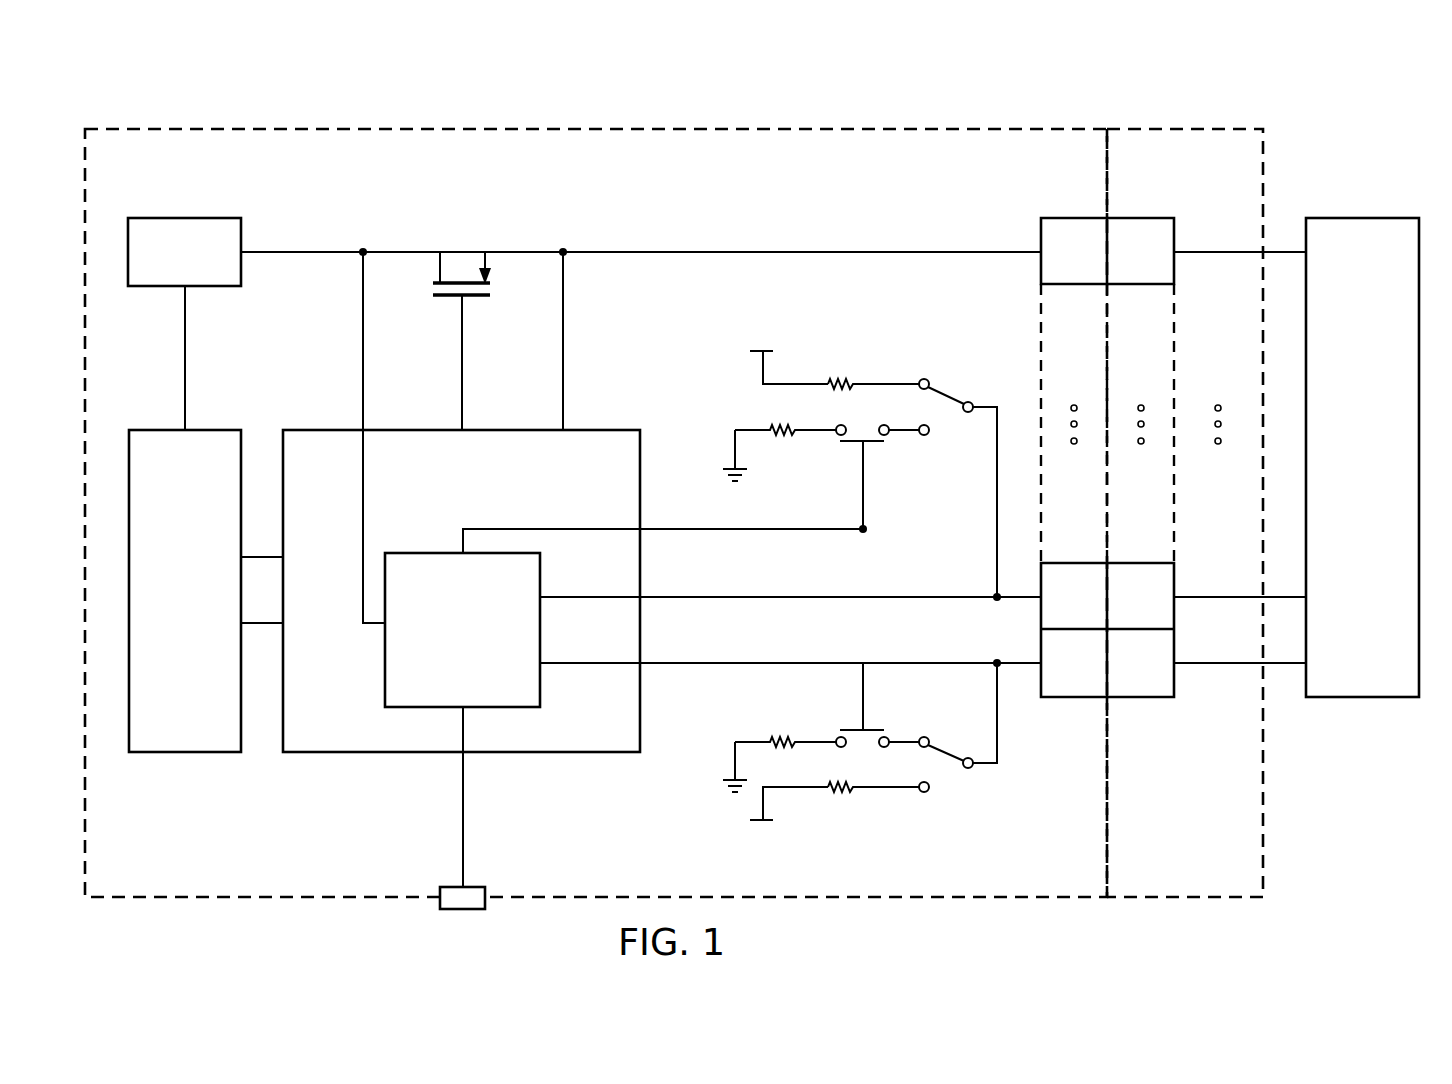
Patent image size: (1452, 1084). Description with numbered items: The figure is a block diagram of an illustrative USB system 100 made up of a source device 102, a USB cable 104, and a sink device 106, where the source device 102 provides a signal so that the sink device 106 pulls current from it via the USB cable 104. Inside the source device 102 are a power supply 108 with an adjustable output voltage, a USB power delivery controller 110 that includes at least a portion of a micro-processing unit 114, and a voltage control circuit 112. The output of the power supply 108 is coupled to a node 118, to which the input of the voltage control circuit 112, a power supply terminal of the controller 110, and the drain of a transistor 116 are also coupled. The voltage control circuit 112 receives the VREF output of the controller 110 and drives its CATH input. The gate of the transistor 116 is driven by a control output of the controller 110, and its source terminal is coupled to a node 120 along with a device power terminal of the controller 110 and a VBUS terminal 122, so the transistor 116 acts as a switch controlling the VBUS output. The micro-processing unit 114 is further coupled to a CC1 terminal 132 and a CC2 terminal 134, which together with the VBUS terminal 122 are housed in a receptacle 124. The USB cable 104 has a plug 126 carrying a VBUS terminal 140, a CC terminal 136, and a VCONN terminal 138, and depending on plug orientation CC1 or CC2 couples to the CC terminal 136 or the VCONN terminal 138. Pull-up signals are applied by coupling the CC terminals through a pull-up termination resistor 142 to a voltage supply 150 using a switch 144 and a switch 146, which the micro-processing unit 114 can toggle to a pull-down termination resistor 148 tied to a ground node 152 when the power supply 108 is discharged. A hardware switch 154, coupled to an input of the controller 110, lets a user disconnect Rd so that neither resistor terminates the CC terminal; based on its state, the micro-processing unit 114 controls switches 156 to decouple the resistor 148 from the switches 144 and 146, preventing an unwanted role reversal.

The USB system 100 is at (628, 101).
The source device 102 is at (483, 122).
The USB cable 104 is at (1207, 120).
The sink device 106 is at (1385, 493).
The power supply 108 is at (172, 218).
The USB power delivery controller 110 is at (423, 424).
The voltage control circuit 112 is at (206, 649).
The micro-processing unit 114 is at (484, 679).
The transistor 116 is at (473, 298).
The node 118 is at (359, 256).
The node 120 is at (566, 256).
The VBUS terminal 122 is at (1095, 268).
The receptacle 124 is at (1073, 492).
The plug 126 is at (1164, 492).
The CC1 terminal 132 is at (1095, 611).
The CC2 terminal 134 is at (1095, 678).
The CC terminal 136 is at (1162, 611).
The VCONN terminal 138 is at (1162, 678).
The VBUS terminal 140 is at (1162, 268).
The pull-up termination resistor 142 is at (844, 380).
The switch 144 is at (947, 394).
The switch 146 is at (942, 761).
The pull-down termination resistor 148 is at (792, 437).
The voltage supply 150 is at (758, 350).
The ground node 152 is at (726, 478).
The hardware switch 154 is at (450, 912).
The switches 156 is at (876, 443).